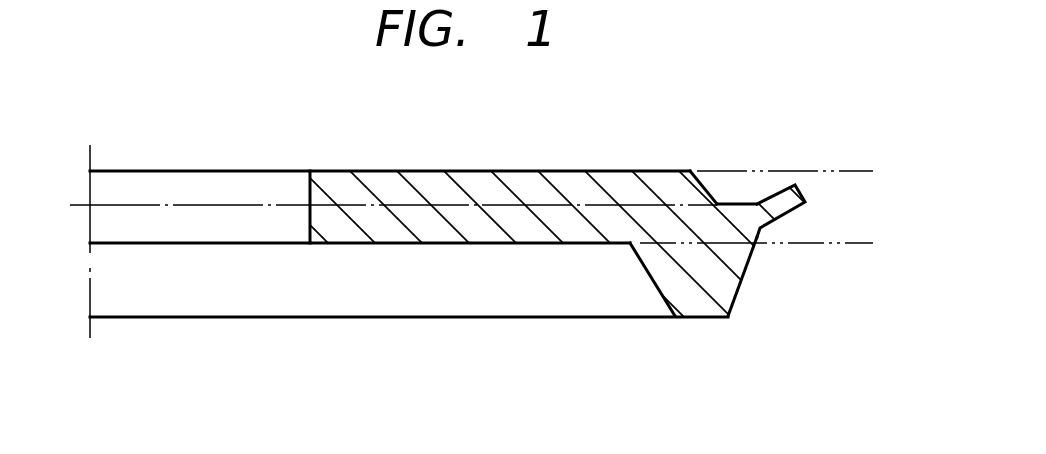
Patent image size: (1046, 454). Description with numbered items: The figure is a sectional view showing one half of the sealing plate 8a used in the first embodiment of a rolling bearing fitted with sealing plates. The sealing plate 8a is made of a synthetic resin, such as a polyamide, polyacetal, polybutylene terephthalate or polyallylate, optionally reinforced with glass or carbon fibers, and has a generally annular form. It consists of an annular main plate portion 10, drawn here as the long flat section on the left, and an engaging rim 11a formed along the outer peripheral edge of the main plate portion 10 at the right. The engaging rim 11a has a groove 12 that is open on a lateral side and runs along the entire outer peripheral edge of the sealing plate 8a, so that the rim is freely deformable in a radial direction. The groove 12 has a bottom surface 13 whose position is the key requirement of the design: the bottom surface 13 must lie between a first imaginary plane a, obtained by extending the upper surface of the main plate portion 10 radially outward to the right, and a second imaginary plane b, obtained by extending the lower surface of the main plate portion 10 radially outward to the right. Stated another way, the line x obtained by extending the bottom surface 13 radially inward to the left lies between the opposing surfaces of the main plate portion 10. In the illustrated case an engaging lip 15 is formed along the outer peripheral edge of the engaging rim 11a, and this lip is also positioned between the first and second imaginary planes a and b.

The sealing plate 8a is at (436, 176).
The main plate portion 10 is at (334, 173).
The engaging rim 11a is at (720, 292).
The groove 12 is at (707, 184).
The bottom surface 13 is at (733, 207).
The engaging lip 15 is at (782, 190).
The line x is at (140, 203).
The first imaginary plane a is at (823, 171).
The second imaginary plane b is at (810, 243).